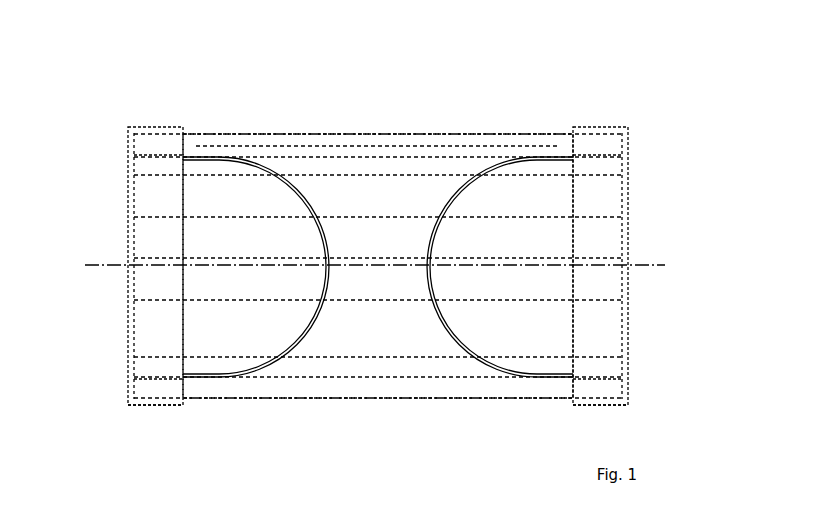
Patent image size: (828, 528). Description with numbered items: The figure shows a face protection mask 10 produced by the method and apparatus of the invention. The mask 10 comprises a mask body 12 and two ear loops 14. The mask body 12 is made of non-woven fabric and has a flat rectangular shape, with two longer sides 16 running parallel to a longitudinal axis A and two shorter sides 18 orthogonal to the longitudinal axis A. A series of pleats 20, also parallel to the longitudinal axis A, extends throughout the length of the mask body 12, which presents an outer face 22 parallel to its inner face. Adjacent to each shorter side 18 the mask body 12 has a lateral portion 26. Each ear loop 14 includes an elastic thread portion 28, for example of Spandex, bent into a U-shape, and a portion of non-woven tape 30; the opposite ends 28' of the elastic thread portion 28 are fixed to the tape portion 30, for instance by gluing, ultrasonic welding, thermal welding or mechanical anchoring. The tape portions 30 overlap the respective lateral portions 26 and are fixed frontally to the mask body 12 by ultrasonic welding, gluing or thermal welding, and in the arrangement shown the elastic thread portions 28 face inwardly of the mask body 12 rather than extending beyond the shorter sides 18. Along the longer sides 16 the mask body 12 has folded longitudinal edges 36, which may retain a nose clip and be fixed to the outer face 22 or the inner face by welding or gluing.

The face protection mask 10 is at (670, 86).
The mask body 12 is at (407, 127).
The ear loops 14 is at (154, 122).
The longer sides 16 is at (334, 133).
The shorter sides 18 is at (128, 175).
The pleats 20 is at (411, 258).
The outer face 22 is at (363, 198).
The lateral portions 26 is at (128, 402).
The elastic thread portion 28 is at (378, 303).
The ends of the elastic thread portion 28' is at (371, 250).
The tape portion 30 is at (137, 237).
The folded longitudinal edge 36 is at (309, 175).
The longitudinal axis A is at (105, 268).